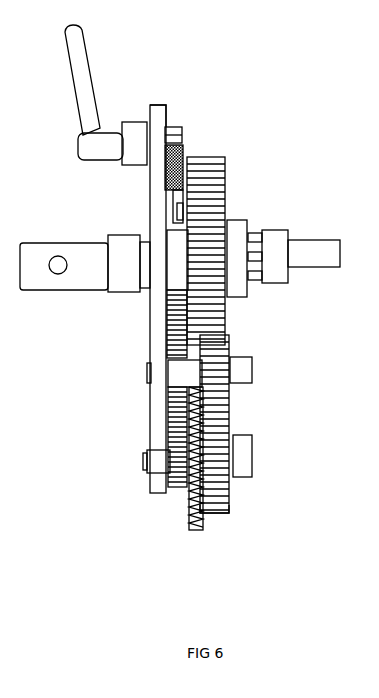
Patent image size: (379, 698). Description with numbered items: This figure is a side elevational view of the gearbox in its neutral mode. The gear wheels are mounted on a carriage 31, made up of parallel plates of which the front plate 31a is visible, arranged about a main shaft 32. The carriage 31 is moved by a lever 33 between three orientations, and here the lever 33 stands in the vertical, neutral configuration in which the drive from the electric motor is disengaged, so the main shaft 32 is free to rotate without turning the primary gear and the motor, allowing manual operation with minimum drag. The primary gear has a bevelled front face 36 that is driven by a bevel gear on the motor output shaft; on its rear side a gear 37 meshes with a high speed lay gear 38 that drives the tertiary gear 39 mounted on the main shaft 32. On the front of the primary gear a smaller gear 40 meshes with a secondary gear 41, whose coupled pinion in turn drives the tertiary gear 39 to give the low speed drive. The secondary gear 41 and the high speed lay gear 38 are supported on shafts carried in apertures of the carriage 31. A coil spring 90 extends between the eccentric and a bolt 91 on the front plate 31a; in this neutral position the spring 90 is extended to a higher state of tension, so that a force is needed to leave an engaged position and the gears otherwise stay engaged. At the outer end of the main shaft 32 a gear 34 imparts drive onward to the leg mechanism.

The carriage 31 is at (148, 183).
The front plate of the carriage 31a is at (157, 110).
The main shaft 32 is at (83, 277).
The lever 33 is at (80, 77).
The gear 34 is at (277, 237).
The bevelled front face 36 is at (192, 523).
The gear 37 is at (230, 510).
The high speed lay gear 38 is at (227, 347).
The tertiary gear 39 is at (212, 187).
The smaller gear 40 is at (190, 473).
The secondary gear 41 is at (168, 333).
The coil spring 90 is at (183, 157).
The bolt 91 is at (170, 210).